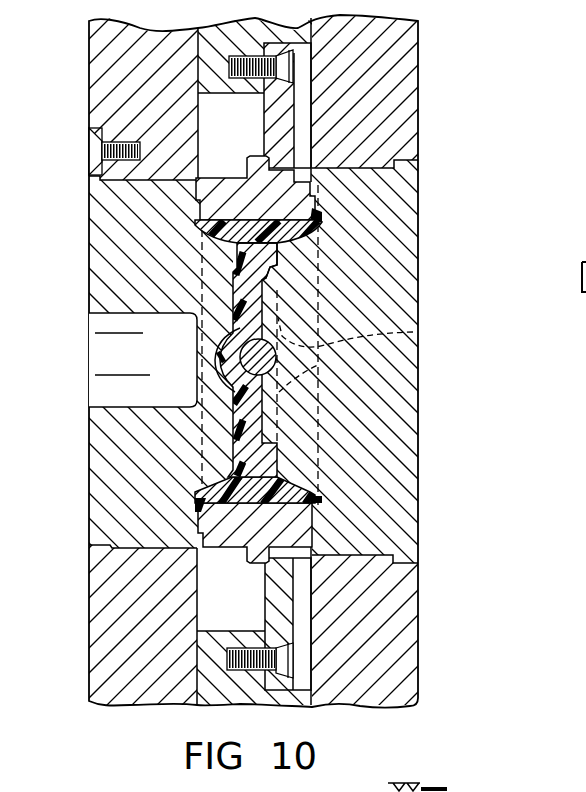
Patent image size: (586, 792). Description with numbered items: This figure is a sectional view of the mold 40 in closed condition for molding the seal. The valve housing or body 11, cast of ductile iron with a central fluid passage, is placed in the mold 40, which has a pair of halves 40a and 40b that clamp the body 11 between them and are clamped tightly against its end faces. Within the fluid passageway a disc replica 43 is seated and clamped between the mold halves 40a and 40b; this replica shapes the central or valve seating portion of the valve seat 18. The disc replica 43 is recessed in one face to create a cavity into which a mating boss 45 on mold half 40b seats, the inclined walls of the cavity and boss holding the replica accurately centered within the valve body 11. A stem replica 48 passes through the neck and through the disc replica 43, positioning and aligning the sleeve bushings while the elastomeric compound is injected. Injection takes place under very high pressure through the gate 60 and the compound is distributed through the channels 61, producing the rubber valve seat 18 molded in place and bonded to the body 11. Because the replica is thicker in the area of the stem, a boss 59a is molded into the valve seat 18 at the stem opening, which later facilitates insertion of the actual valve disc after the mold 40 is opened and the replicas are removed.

The mold 40 is at (422, 186).
The mold half 40a is at (105, 507).
The mold half 40b is at (403, 300).
The disc replica 43 is at (285, 258).
The mating boss 45 is at (272, 424).
The stem replica 48 is at (271, 363).
The valve seat 18 is at (302, 481).
The housing or body 11 is at (226, 545).
The boss 59a is at (440, 333).
The gate 60 is at (220, 362).
The channels 61 is at (230, 294).